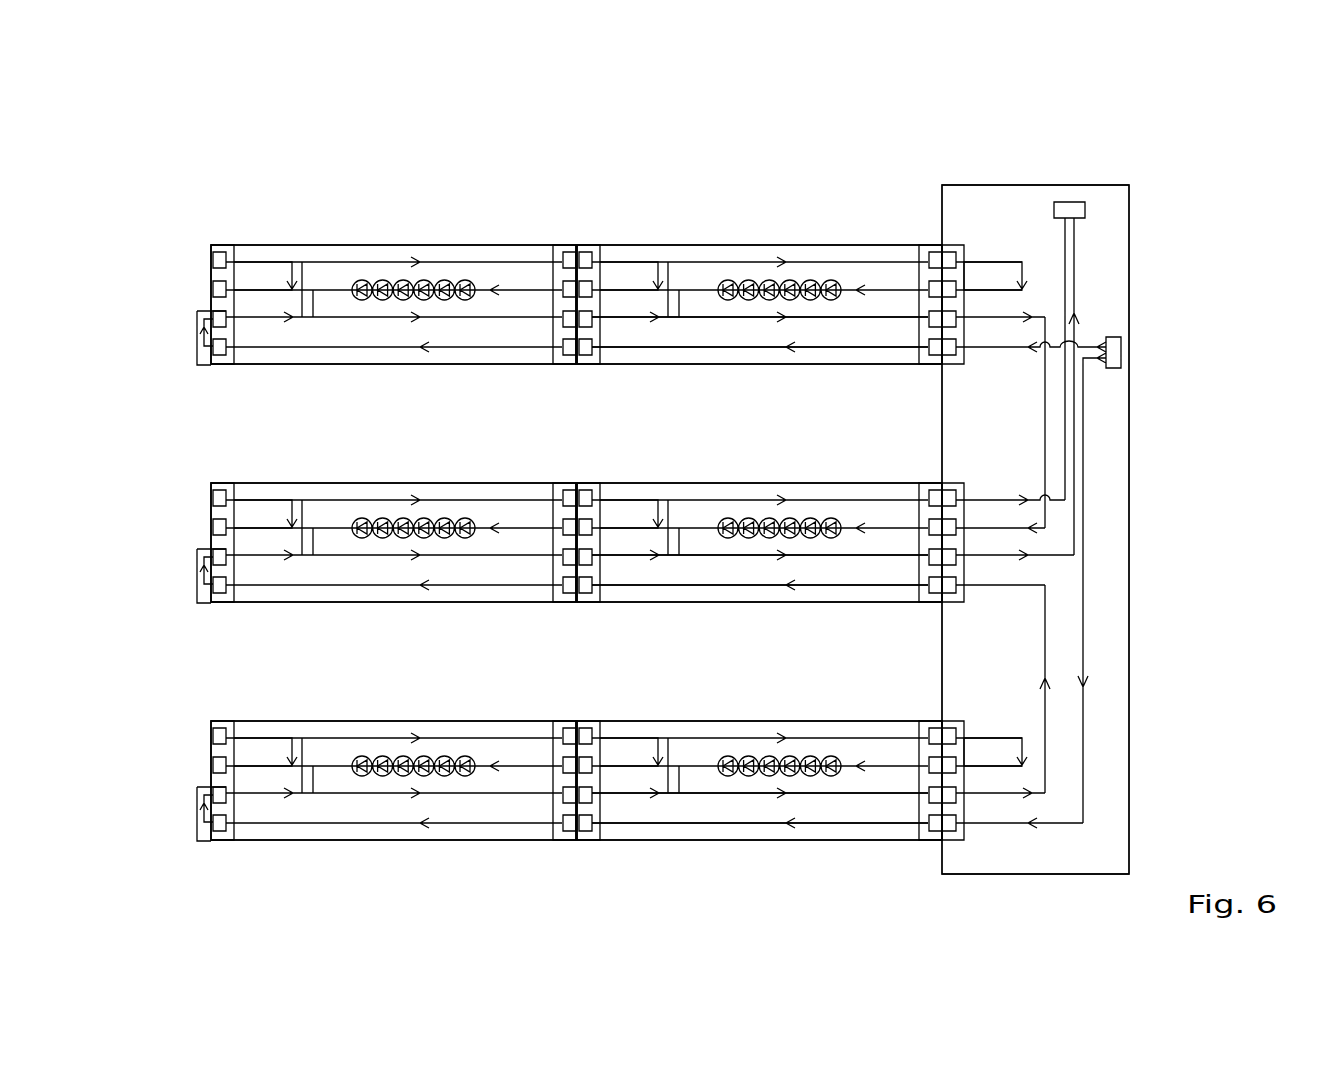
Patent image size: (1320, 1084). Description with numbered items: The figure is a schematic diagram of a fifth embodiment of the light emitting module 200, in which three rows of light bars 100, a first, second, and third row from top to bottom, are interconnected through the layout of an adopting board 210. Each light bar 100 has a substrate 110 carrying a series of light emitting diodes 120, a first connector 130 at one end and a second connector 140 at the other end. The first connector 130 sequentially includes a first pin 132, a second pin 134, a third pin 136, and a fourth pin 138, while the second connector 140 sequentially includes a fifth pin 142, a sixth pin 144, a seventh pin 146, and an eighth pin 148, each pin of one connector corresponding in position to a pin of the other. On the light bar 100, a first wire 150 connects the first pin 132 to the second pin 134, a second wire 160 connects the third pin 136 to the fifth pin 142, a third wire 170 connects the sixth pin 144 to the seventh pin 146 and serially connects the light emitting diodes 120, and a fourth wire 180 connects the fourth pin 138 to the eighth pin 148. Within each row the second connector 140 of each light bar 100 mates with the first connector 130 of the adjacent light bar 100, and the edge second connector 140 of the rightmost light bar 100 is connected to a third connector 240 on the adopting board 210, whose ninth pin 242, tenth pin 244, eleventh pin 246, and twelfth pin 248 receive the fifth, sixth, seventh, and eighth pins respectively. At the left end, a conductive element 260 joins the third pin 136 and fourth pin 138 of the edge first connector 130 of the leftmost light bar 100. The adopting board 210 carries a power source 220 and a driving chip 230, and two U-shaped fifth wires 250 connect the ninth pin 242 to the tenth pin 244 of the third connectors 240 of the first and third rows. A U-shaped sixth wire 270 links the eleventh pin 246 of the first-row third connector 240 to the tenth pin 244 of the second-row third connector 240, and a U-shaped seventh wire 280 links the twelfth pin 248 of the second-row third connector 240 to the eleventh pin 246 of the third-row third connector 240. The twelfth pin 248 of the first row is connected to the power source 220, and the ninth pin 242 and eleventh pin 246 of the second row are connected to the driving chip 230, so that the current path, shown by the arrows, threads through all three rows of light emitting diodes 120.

The light bar 100 is at (818, 207).
The substrate 110 is at (758, 244).
The light emitting diodes 120 is at (728, 280).
The first connector 130 is at (585, 244).
The first pin 132 is at (588, 264).
The second pin 134 is at (588, 292).
The third pin 136 is at (588, 322).
The fourth pin 138 is at (585, 356).
The second connector 140 is at (936, 244).
The fifth pin 142 is at (934, 264).
The sixth pin 144 is at (934, 292).
The seventh pin 146 is at (934, 322).
The eighth pin 148 is at (935, 356).
The first wire 150 is at (612, 261).
The second wire 160 is at (918, 260).
The third wire 170 is at (708, 322).
The fourth wire 180 is at (763, 350).
The light emitting module 200 is at (187, 137).
The adopting board 210 is at (970, 185).
The power source 220 is at (1122, 352).
The driving chip 230 is at (1069, 202).
The third connector 240 is at (948, 720).
The ninth pin 242 is at (951, 739).
The tenth pin 244 is at (951, 768).
The eleventh pin 246 is at (951, 797).
The twelfth pin 248 is at (951, 828).
The fifth wire 250 is at (975, 737).
The conductive element 260 is at (197, 338).
The sixth wire 270 is at (1045, 398).
The seventh wire 280 is at (1045, 635).